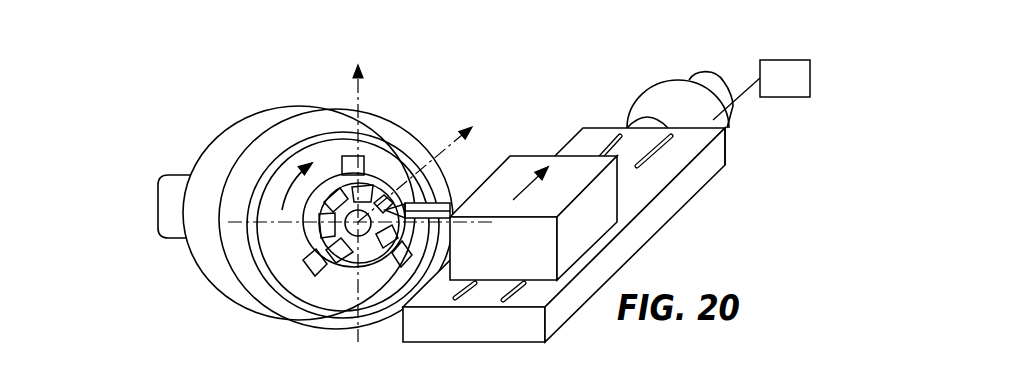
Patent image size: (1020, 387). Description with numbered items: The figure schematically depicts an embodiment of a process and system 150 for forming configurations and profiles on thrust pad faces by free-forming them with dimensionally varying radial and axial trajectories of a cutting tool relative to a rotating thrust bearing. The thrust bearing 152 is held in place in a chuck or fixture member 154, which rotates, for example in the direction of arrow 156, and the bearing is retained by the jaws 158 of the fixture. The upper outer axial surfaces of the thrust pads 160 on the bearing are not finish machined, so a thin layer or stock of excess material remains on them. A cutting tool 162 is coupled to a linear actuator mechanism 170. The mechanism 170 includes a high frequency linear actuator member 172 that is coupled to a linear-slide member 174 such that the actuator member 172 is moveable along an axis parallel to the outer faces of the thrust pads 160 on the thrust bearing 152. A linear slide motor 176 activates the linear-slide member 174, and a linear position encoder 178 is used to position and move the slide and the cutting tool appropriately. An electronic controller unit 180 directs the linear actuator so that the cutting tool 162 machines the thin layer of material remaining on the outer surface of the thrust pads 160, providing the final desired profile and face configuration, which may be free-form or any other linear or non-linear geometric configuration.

The process and system 150 is at (216, 33).
The thrust bearing 152 is at (314, 231).
The chuck or fixture member 154 is at (197, 195).
The arrow 156 is at (290, 190).
The jaws 158 is at (257, 325).
The thrust pads 160 is at (343, 253).
The cutting tool 162 is at (430, 206).
The linear actuator mechanism 170 is at (672, 206).
The high frequency linear actuator member 172 is at (563, 168).
The linear-slide member 174 is at (720, 152).
The linear slide motor 176 is at (653, 105).
The linear position encoder 178 is at (717, 90).
The electronic controller unit (ECU) 180 is at (790, 58).